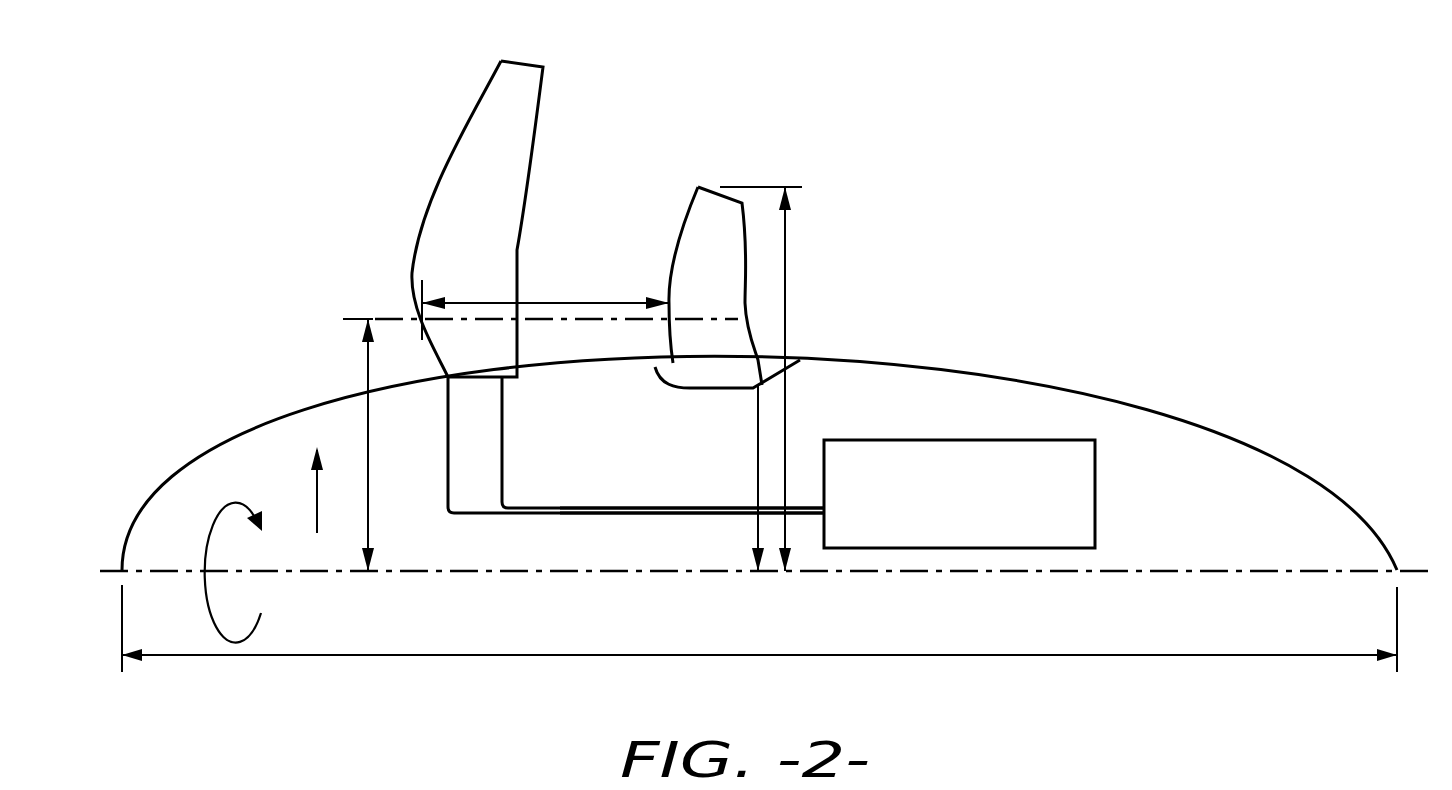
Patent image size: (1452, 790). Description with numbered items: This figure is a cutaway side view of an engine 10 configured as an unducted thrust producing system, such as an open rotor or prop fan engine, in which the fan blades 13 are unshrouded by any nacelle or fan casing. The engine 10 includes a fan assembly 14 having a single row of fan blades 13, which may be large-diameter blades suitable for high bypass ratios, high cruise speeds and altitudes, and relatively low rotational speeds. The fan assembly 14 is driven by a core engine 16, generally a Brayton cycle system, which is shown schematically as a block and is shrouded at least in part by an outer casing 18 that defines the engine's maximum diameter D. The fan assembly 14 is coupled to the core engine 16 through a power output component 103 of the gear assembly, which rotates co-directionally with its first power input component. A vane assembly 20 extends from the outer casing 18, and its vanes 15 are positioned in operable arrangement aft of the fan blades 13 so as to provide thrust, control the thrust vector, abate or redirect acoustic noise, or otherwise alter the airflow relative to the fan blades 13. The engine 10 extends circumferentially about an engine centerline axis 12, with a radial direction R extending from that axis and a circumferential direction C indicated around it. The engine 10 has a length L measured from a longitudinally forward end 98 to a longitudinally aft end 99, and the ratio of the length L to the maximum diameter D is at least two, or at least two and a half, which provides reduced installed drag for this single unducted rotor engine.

The engine 10 is at (1148, 193).
The engine centerline axis 12 is at (445, 580).
The fan blades 13 is at (498, 146).
The fan assembly 14 is at (417, 128).
The vanes 15 is at (697, 249).
The core engine 16 is at (959, 494).
The outer casing 18 is at (950, 365).
The vane assembly 20 is at (814, 246).
The longitudinally forward end 98 is at (114, 564).
The longitudinally aft end 99 is at (1407, 564).
The power output component 103 is at (565, 507).
The length L is at (535, 655).
The maximum diameter D is at (758, 420).
The radial direction R is at (522, 426).
The circumferential direction C is at (241, 573).